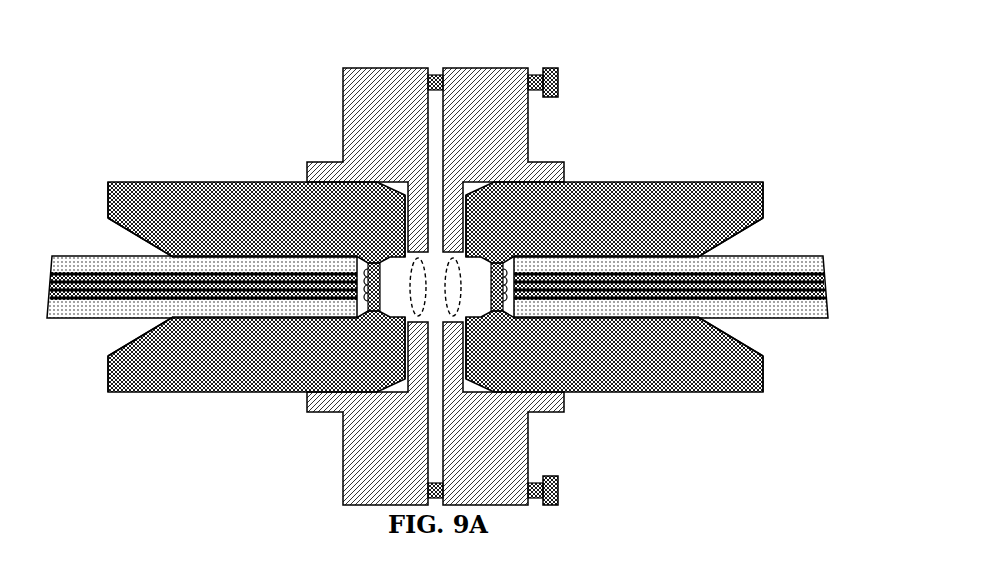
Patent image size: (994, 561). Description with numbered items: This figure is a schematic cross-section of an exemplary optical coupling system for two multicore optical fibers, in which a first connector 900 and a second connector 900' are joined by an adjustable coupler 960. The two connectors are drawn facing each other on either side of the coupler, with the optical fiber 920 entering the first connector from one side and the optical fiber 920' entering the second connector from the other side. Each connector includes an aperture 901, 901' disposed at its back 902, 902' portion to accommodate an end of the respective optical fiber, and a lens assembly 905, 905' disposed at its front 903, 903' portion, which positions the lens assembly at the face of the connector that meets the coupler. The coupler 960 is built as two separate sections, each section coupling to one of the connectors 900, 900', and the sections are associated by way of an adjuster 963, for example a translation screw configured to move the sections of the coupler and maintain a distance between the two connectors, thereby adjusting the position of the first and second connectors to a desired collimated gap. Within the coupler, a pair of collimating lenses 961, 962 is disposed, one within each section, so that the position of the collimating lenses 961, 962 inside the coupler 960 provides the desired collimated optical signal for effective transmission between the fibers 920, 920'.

The first connector 900 is at (256, 322).
The second connector 900' is at (616, 322).
The aperture 901 is at (107, 284).
The aperture 901' is at (767, 283).
The back 902 is at (85, 266).
The back 902' is at (786, 266).
The front 903 is at (343, 202).
The front 903' is at (546, 347).
The lens assembly 905 is at (308, 212).
The lens assembly 905' is at (581, 356).
The optical fiber 920 is at (195, 315).
The optical fiber 920' is at (681, 315).
The adjustable coupler 960 is at (523, 68).
The collimating lens 961 is at (421, 264).
The collimating lens 962 is at (456, 264).
The adjuster 963 is at (559, 78).